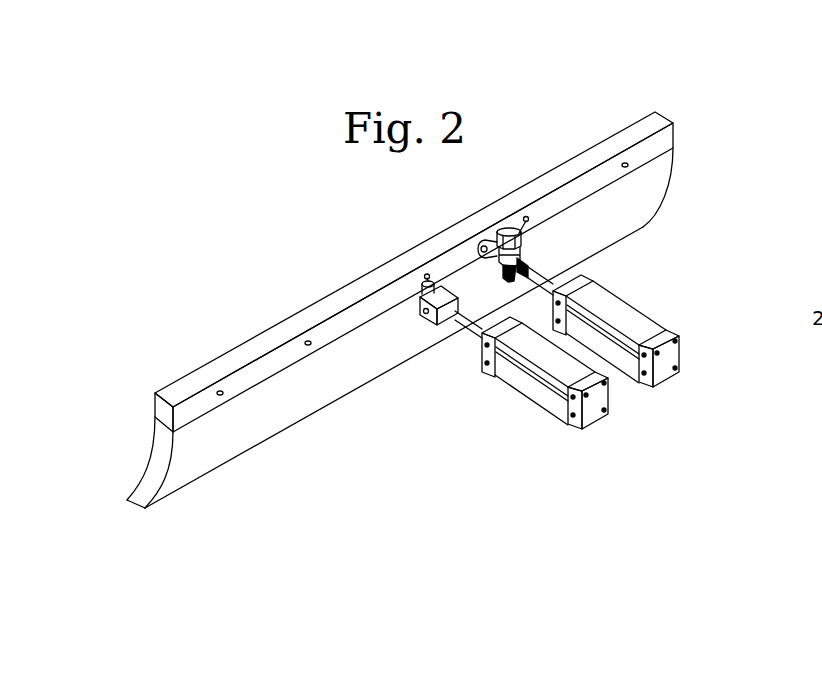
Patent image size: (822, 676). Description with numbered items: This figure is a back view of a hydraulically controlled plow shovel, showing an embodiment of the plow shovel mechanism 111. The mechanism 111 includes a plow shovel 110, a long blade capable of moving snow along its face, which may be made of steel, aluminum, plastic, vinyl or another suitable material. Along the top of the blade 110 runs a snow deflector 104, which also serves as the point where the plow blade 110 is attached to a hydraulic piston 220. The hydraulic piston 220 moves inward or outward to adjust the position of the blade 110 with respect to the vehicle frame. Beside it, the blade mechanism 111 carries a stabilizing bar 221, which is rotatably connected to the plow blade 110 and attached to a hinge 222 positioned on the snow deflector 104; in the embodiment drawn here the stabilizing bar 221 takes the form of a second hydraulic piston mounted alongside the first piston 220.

The snow deflector 104 is at (469, 312).
The plow shovel 110 is at (407, 238).
The plow shovel mechanism 111 is at (340, 481).
The hydraulic piston 220 is at (517, 415).
The stabilizing bar 221 is at (701, 335).
The hinge 222 is at (521, 230).